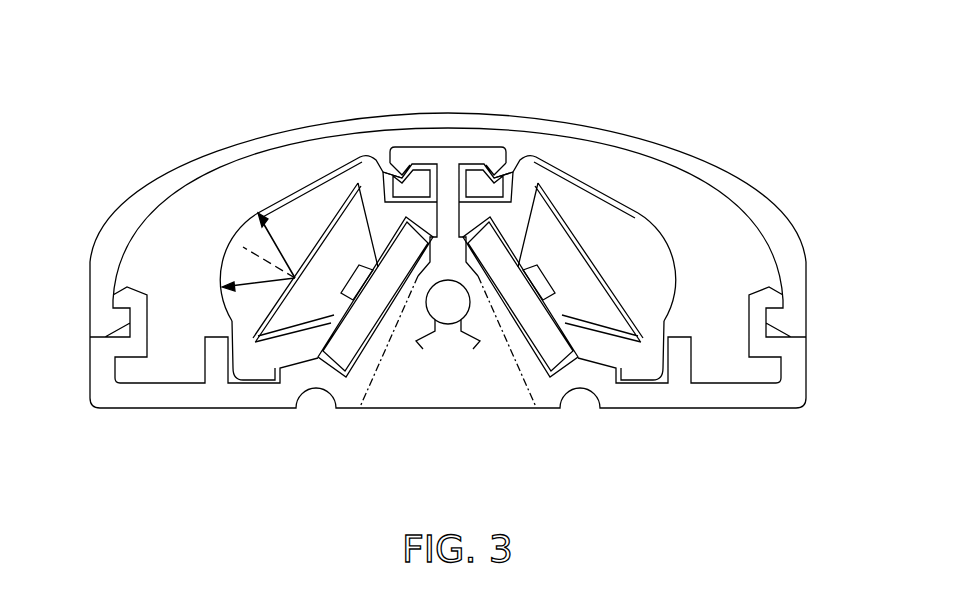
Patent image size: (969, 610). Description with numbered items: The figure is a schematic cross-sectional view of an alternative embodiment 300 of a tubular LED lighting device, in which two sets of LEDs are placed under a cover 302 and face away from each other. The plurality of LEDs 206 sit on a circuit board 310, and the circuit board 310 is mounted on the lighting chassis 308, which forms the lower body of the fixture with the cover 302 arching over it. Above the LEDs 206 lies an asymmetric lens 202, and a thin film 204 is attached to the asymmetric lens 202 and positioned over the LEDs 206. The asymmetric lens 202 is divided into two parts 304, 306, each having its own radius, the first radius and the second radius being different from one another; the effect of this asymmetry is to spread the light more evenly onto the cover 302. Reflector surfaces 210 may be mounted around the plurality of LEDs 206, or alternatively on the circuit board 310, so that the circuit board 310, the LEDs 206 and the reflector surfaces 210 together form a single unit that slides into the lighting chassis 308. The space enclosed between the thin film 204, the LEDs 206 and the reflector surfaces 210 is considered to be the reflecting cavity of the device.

The alternative embodiment 300 is at (449, 259).
The cover 302 is at (207, 153).
The asymmetric lens 202 is at (230, 320).
The thin film 204 is at (340, 208).
The plurality of LEDs 206 is at (347, 293).
The reflector surfaces 210 is at (328, 318).
The first lens part 304 is at (316, 220).
The second lens part 306 is at (259, 316).
The lighting chassis 308 is at (632, 410).
The circuit board 310 is at (370, 325).